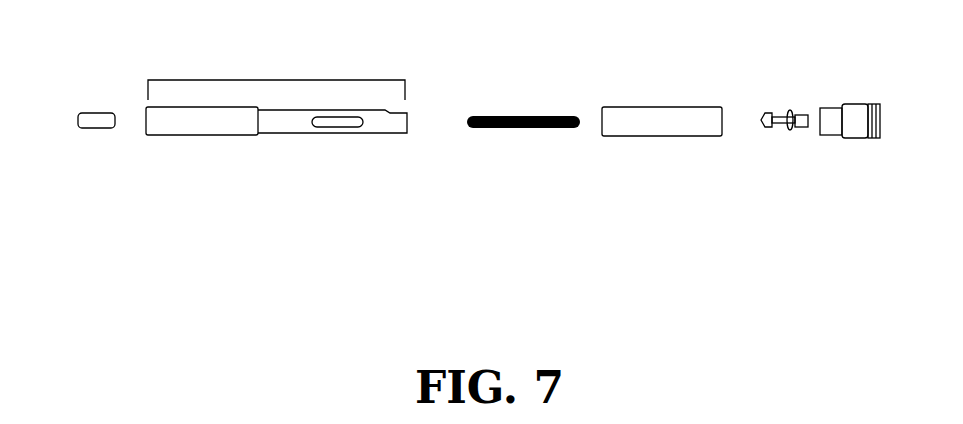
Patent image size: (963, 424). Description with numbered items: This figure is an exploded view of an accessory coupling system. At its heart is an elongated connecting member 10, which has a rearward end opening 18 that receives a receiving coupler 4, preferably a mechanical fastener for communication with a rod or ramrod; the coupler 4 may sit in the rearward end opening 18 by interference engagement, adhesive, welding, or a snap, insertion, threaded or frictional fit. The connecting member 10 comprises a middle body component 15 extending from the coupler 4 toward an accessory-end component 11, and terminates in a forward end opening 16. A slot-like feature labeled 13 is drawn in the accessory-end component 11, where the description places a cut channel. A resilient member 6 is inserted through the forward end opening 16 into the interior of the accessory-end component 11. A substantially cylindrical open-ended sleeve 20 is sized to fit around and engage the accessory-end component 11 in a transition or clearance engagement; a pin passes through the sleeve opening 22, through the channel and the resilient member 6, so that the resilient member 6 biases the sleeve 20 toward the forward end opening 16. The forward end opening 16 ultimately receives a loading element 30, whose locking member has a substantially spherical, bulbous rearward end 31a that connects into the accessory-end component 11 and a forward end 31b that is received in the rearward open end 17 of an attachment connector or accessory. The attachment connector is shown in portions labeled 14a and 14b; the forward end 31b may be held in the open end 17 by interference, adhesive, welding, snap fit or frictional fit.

The receiving coupler 4 is at (76, 122).
The resilient member 6 is at (516, 130).
The elongated connecting member 10 is at (277, 80).
The accessory-end component 11 is at (325, 136).
The slot 13 is at (355, 126).
The connector end 14a is at (880, 104).
The connector body 14b is at (843, 112).
The middle body component 15 is at (203, 136).
The forward end opening 16 is at (409, 129).
The rearward open end 17 is at (820, 107).
The rearward end opening 18 is at (145, 120).
The open-ended sleeve 20 is at (648, 138).
The sleeve opening 22 is at (661, 118).
The loading element 30 is at (788, 107).
The rearward end 31a is at (772, 130).
The forward end 31b is at (823, 133).